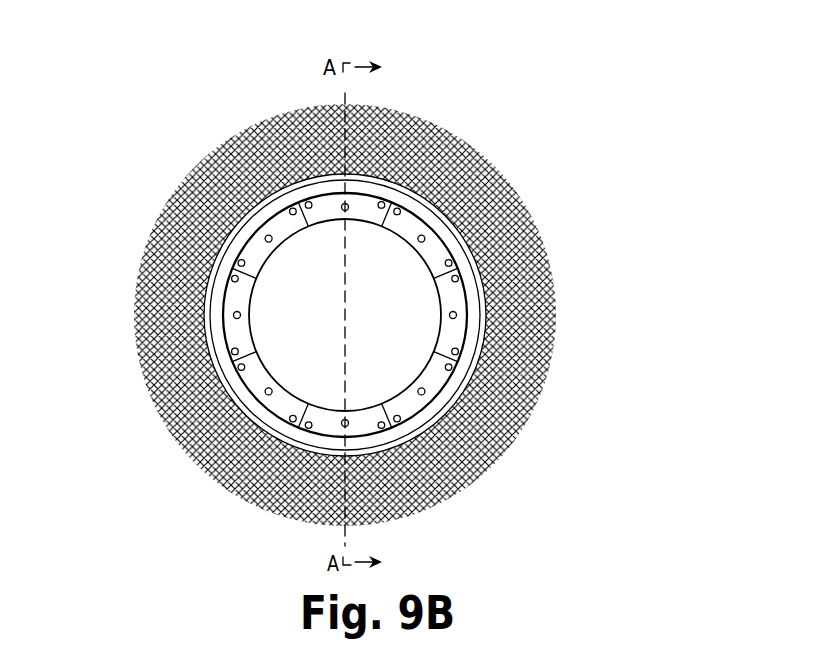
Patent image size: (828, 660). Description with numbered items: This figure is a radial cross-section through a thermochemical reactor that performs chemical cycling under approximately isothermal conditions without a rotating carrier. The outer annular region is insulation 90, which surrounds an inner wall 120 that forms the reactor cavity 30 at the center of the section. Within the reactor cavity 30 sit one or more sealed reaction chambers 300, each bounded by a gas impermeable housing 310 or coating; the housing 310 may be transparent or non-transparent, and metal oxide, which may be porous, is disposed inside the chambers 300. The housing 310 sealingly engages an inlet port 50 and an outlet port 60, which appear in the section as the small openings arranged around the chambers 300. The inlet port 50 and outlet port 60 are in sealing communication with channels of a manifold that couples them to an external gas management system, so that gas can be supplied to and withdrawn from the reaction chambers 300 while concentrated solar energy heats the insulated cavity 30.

The reactor cavity 30 is at (312, 370).
The inlet port 50 is at (432, 225).
The outlet port 60 is at (472, 238).
The insulation 90 is at (236, 148).
The inner wall 120 is at (322, 297).
The sealed reaction chamber 300 is at (478, 410).
The gas impermeable housing 310 is at (488, 340).